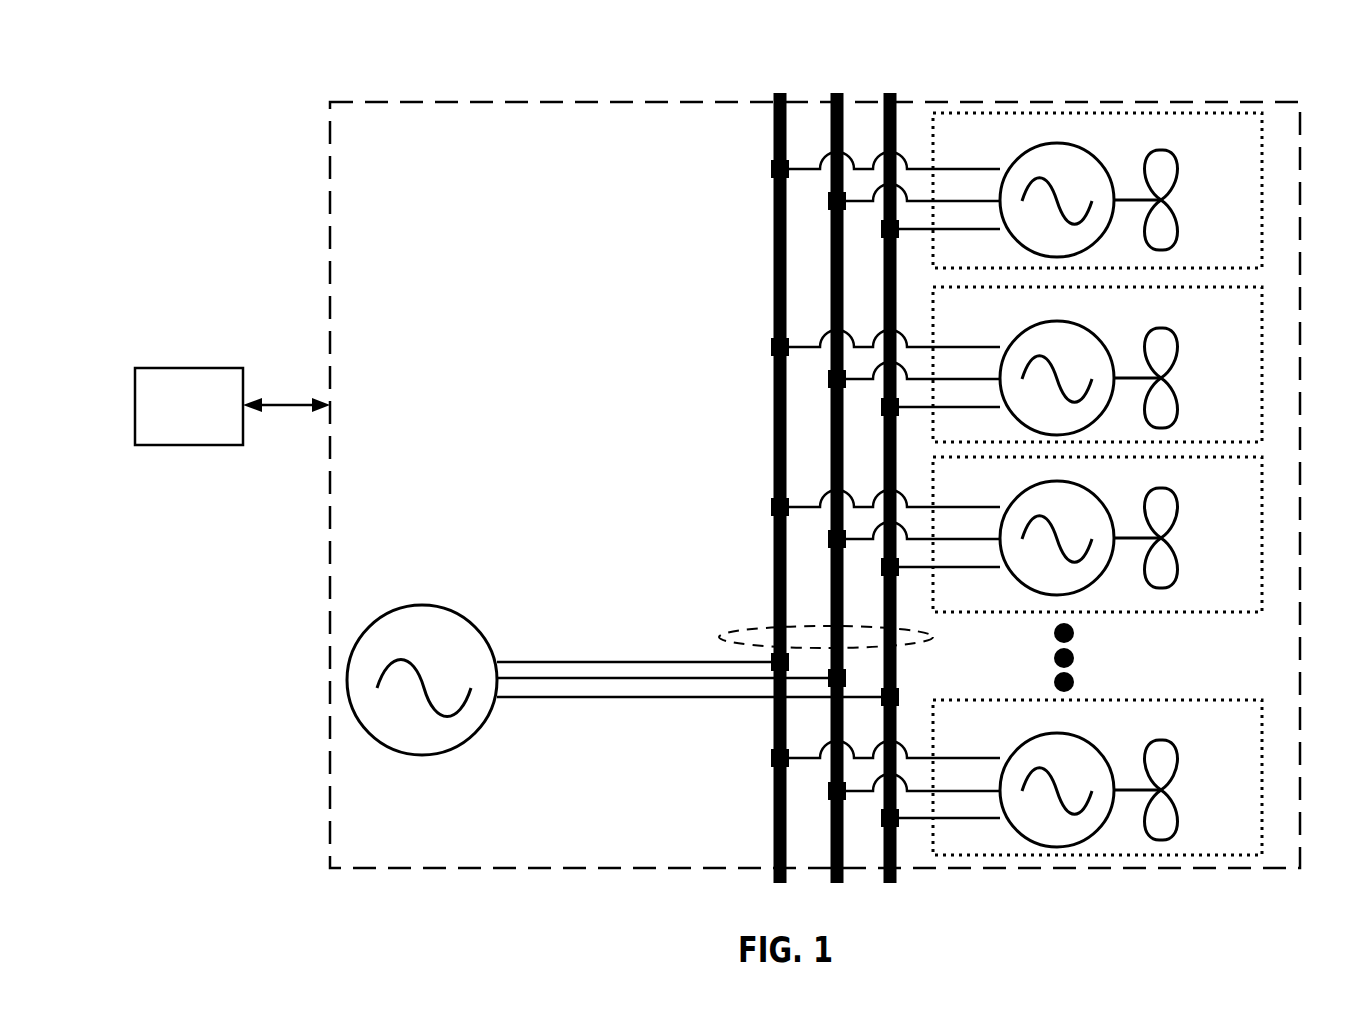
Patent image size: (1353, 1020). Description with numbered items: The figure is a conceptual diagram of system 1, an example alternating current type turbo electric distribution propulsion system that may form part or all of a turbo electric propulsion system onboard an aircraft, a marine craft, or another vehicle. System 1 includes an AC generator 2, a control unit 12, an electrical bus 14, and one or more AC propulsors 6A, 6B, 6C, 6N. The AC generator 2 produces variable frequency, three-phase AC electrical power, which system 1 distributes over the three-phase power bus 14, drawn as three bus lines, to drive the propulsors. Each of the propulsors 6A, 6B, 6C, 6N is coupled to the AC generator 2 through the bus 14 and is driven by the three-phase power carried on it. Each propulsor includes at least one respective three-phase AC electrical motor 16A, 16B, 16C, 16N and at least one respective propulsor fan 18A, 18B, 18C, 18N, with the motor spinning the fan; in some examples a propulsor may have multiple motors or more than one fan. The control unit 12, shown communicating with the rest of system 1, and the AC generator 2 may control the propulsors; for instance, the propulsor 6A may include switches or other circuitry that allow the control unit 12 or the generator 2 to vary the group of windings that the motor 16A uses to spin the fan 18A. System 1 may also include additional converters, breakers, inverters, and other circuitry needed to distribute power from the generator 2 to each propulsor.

The system 1 is at (207, 85).
The control unit 12 is at (175, 419).
The AC generator 2 is at (415, 605).
The electrical bus 14 is at (736, 620).
The propulsor 6A is at (1250, 147).
The propulsor 6B is at (1250, 321).
The propulsor 6C is at (1250, 491).
The propulsor 6N is at (1250, 735).
The three-phase AC electrical motor 16A is at (1008, 164).
The three-phase AC electrical motor 16B is at (1008, 342).
The three-phase AC electrical motor 16C is at (1018, 490).
The three-phase AC electrical motor 16N is at (1026, 738).
The propulsor fan 18A is at (1166, 203).
The propulsor fan 18B is at (1166, 381).
The propulsor fan 18C is at (1168, 556).
The propulsor fan 18N is at (1168, 797).